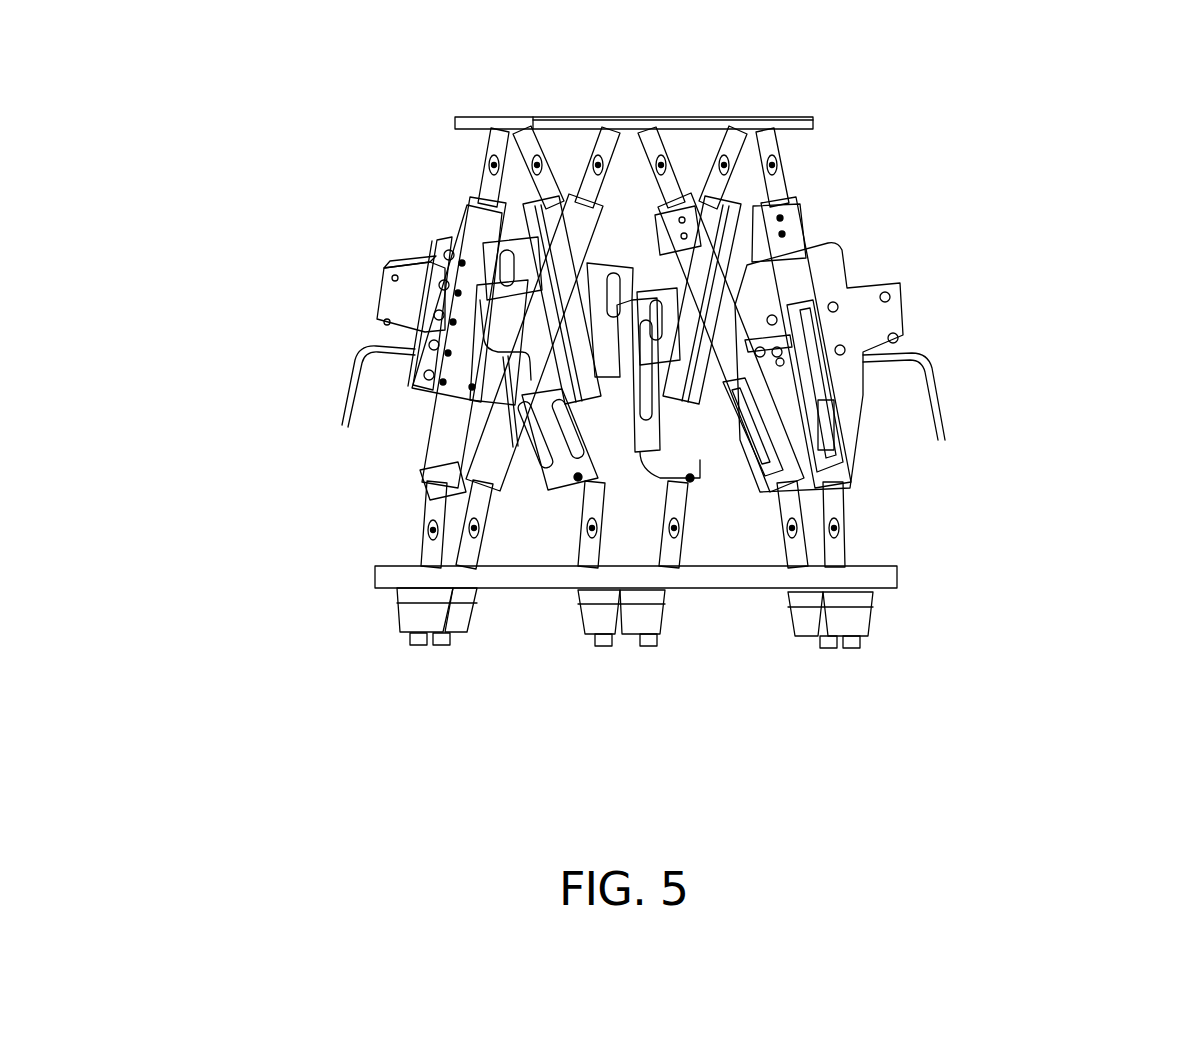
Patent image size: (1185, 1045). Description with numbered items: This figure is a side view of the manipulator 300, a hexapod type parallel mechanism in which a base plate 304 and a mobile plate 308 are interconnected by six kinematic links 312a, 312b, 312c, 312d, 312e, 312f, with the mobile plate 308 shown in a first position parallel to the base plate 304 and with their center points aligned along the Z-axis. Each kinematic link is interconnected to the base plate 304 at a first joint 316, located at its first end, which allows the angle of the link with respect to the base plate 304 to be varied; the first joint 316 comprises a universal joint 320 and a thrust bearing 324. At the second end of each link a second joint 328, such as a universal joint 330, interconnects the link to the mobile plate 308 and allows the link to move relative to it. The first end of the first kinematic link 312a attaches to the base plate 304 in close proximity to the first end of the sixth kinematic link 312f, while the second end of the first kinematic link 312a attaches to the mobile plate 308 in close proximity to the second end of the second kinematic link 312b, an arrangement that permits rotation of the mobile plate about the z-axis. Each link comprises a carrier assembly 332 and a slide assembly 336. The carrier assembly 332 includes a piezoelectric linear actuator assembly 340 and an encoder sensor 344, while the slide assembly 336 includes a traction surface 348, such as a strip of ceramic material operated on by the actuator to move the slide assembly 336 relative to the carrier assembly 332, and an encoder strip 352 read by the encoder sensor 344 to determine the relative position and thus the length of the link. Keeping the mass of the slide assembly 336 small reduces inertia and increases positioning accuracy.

The manipulator 300 is at (661, 850).
The base plate 304 is at (731, 559).
The mobile plate 308 is at (787, 125).
The first kinematic link 312a is at (467, 427).
The second kinematic link 312b is at (312, 365).
The third kinematic link 312c is at (522, 302).
The fourth kinematic link 312d is at (710, 304).
The fifth kinematic link 312e is at (850, 275).
The sixth kinematic link 312f is at (851, 411).
The first joint 316 is at (688, 696).
The universal joint 320 is at (844, 653).
The thrust bearing 324 is at (538, 694).
The second joint 328 is at (493, 158).
The universal joint 330 is at (505, 135).
The carrier assembly 332 is at (412, 369).
The slide assembly 336 is at (482, 228).
The piezoelectric linear actuator assembly 340 is at (402, 303).
The encoder sensor 344 is at (942, 386).
The traction surface 348 is at (800, 217).
The encoder strip 352 is at (903, 452).